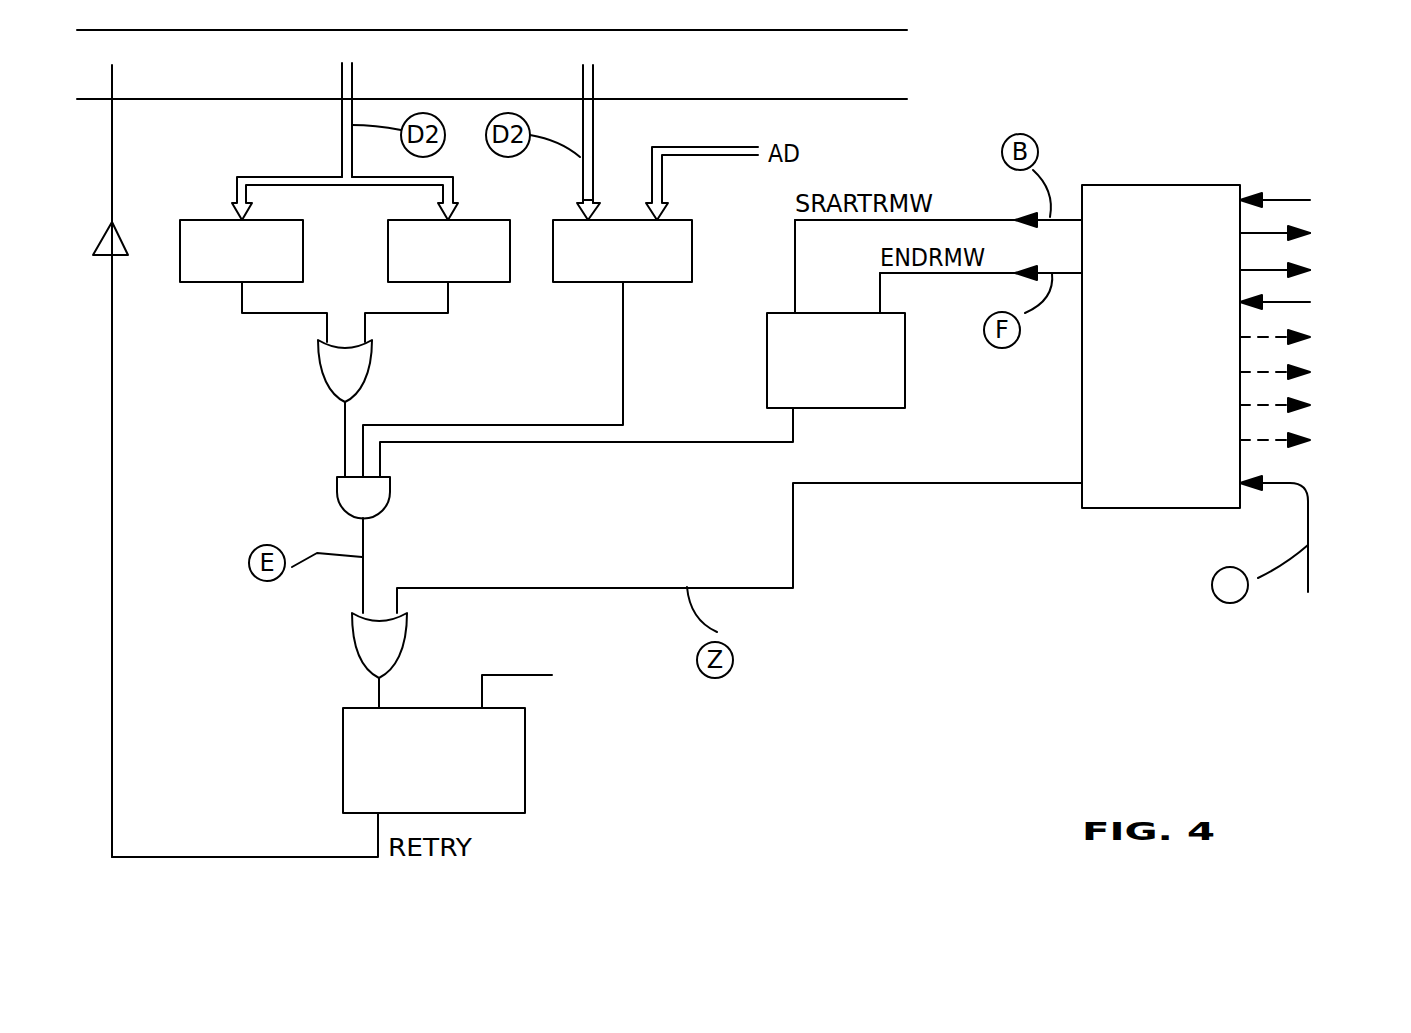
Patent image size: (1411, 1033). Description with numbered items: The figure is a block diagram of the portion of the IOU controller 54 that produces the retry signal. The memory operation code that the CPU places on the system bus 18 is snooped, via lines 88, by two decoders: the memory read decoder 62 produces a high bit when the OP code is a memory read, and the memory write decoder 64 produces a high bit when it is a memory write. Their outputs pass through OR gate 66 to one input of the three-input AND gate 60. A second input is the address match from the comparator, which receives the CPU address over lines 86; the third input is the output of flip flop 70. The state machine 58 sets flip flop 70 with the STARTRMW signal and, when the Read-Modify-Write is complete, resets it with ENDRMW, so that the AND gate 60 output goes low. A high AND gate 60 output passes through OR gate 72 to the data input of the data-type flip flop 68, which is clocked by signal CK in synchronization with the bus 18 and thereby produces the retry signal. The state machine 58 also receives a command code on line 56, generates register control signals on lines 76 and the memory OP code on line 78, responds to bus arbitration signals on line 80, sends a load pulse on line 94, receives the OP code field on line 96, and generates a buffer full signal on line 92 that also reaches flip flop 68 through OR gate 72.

The system bus 18 is at (835, 99).
The IOU controller 54 is at (848, 603).
The line 56 is at (1308, 517).
The state machine 58 is at (1157, 185).
The AND gate 60 is at (337, 497).
The memory read decoder 62 is at (210, 282).
The memory write decoder 64 is at (473, 282).
The OR gate 66 is at (332, 373).
The data-type flip flop 68 is at (525, 745).
The flip flop 70 is at (905, 372).
The OR gate 72 is at (360, 652).
The lines 76 is at (1295, 443).
The line 78 is at (1287, 232).
The line 80 is at (1283, 198).
The lines 86 is at (592, 142).
The lines 88 is at (342, 148).
The line 92 is at (573, 583).
The line 94 is at (1298, 272).
The line 96 is at (1298, 302).